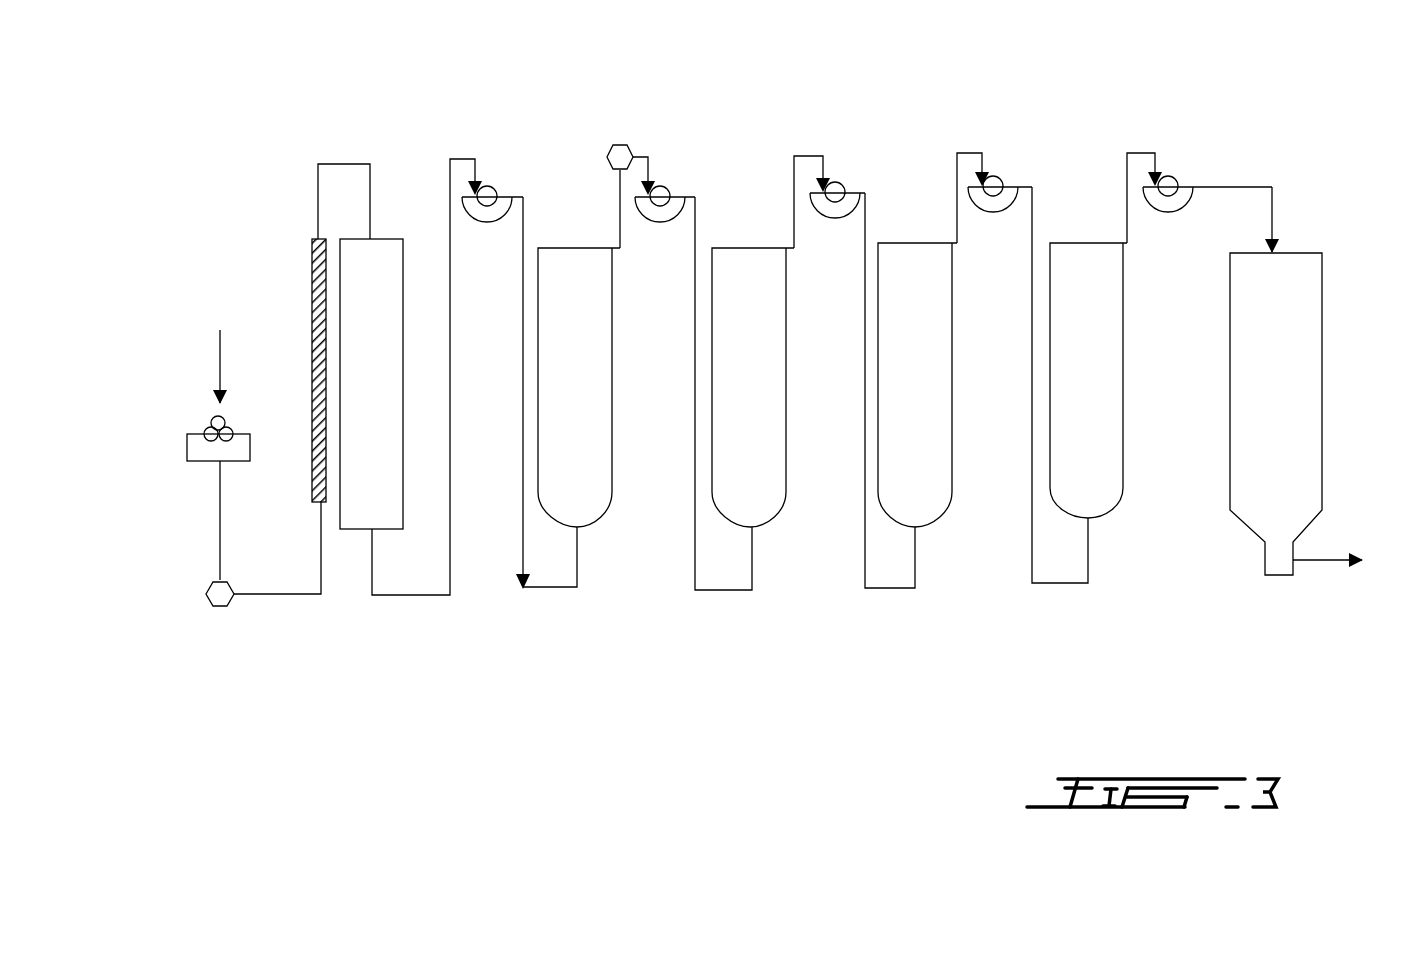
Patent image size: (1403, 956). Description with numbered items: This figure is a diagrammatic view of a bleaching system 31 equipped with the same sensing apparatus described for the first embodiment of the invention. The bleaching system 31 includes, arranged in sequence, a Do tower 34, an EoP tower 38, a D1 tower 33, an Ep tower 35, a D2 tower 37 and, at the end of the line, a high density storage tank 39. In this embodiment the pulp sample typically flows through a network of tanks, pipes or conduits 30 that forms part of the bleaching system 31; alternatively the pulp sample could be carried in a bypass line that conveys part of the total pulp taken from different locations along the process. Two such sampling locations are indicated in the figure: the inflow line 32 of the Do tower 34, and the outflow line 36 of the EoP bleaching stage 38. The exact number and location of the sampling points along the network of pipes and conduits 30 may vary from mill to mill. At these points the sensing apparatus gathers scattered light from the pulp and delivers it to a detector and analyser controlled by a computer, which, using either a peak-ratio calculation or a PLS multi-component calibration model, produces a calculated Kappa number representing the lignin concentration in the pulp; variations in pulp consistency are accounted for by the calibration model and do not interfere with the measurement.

The network of tanks, pipes or conduits 30 is at (400, 597).
The bleaching system 31 is at (582, 672).
The inflow line 32 is at (218, 608).
The D1 tower 33 is at (775, 510).
The Do tower 34 is at (398, 239).
The Ep tower 35 is at (942, 503).
The outflow line 36 is at (620, 144).
The D2 tower 37 is at (1115, 500).
The EoP tower 38 is at (570, 248).
The high density storage tank 39 is at (1322, 495).